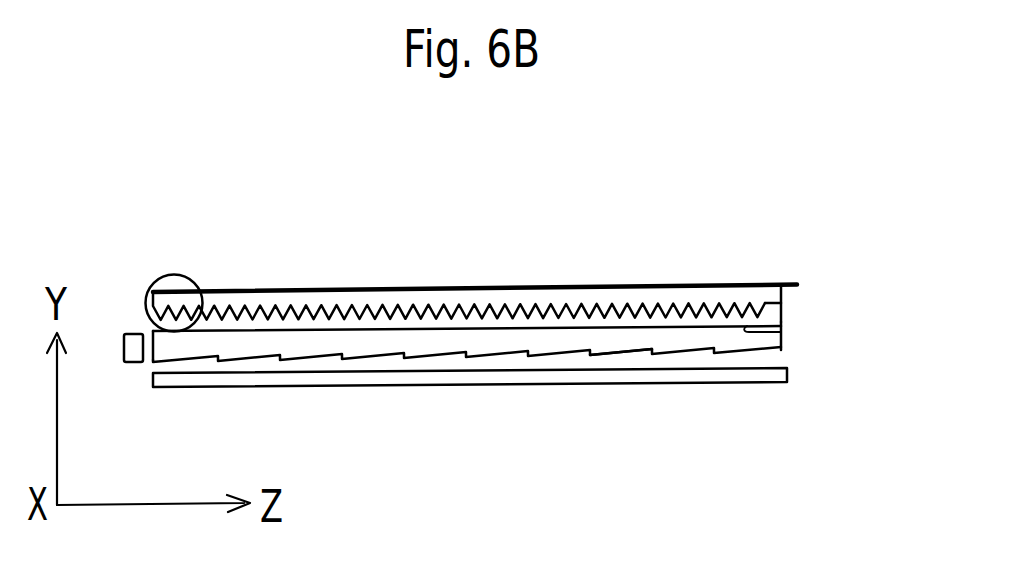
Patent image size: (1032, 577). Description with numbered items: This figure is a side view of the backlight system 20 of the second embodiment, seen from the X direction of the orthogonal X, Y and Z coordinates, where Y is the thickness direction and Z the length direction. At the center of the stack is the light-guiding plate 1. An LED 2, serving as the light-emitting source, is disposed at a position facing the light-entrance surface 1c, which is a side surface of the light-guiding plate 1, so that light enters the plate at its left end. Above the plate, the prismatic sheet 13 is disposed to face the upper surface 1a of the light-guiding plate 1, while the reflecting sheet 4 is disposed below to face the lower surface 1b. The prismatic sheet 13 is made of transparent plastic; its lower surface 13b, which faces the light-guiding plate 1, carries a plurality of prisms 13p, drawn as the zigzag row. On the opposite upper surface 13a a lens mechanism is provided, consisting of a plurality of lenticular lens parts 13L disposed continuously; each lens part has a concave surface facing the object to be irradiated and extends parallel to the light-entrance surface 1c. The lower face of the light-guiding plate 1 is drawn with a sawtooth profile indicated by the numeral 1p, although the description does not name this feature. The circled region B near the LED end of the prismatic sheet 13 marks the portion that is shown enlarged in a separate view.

The light-guiding plate 1 is at (518, 406).
The upper surface 1a is at (783, 328).
The lower surface 1b is at (593, 357).
The light-entrance surface 1c is at (152, 359).
The prism array on bottom of light guide plate 1p is at (543, 358).
The LED 2 is at (134, 333).
The reflecting sheet 4 is at (330, 378).
The prismatic sheet 13 is at (535, 252).
The lenticular lens parts 13L is at (607, 287).
The prisms 13p is at (783, 324).
The upper surface 13a is at (793, 283).
The lower surface 13b is at (775, 300).
The backlight system 20 is at (535, 250).
The portion B is at (193, 292).